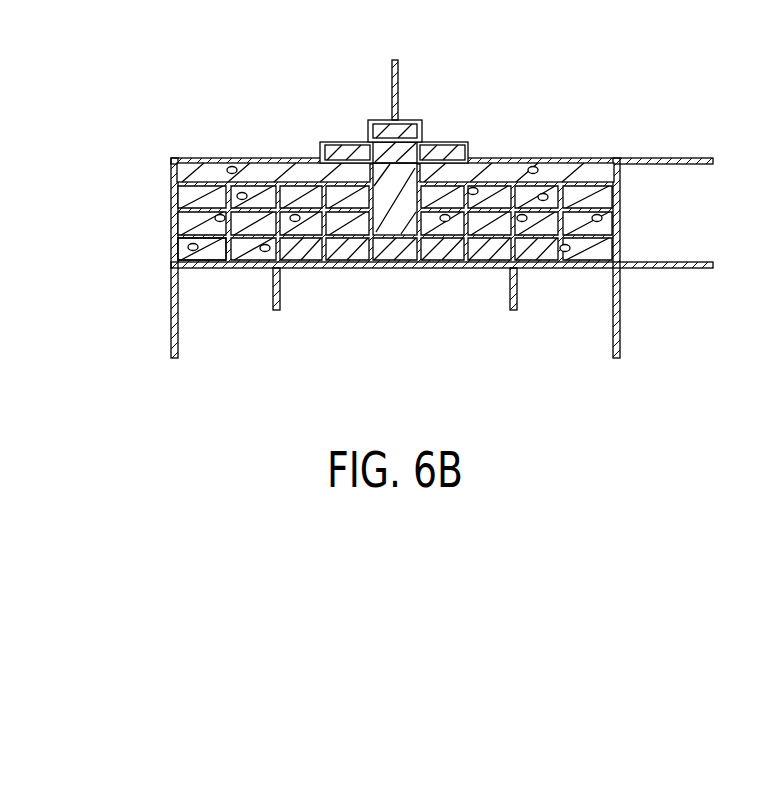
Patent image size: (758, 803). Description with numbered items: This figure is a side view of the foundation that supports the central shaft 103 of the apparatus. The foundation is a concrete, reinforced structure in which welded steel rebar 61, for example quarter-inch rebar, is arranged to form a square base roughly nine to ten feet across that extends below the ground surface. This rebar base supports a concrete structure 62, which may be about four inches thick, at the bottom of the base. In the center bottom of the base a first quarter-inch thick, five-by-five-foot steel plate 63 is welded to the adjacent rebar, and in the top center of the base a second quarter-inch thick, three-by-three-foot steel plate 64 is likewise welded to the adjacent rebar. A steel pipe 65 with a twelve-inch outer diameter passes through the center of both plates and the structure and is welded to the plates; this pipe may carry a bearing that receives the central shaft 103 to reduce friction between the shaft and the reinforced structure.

The welded steel rebar 61 is at (178, 248).
The concrete structure 62 is at (249, 245).
The first steel plate 63 is at (516, 315).
The second steel plate 64 is at (444, 156).
The steel pipe 65 is at (396, 130).
The central shaft 103 is at (399, 87).